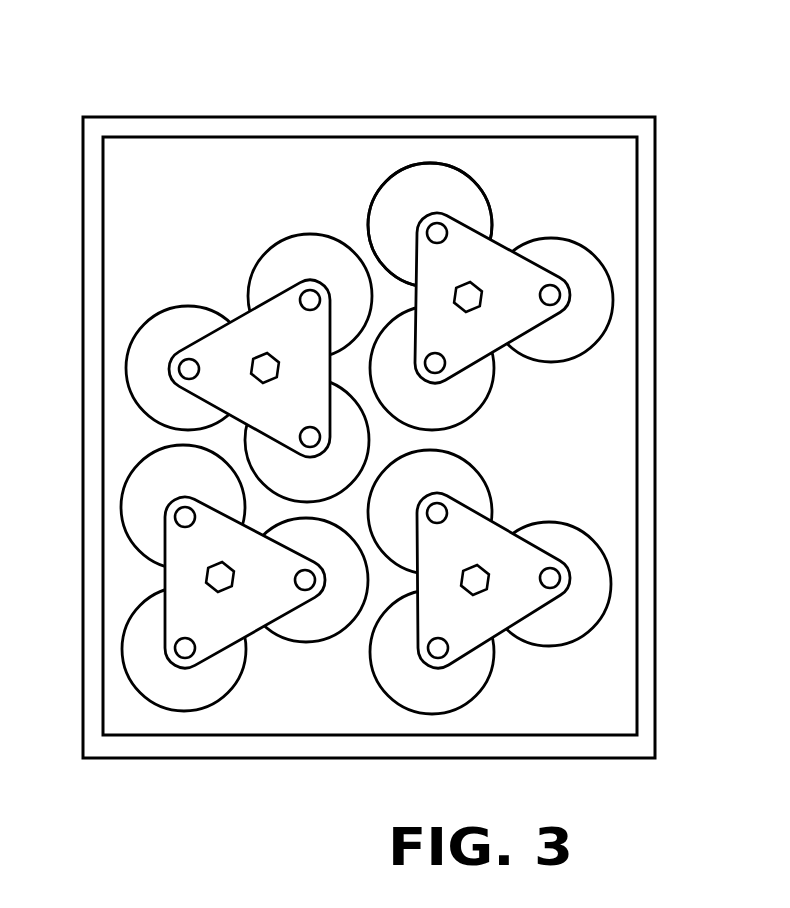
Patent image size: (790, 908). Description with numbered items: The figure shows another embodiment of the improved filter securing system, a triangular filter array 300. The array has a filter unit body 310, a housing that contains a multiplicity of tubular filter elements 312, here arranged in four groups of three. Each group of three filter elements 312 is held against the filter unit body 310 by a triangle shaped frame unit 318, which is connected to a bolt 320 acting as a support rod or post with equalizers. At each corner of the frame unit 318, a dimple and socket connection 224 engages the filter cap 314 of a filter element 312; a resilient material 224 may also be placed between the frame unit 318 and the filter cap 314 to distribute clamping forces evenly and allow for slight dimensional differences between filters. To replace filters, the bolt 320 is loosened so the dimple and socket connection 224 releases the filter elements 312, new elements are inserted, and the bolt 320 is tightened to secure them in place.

The triangular filter array 300 is at (503, 53).
The filter unit body 310 is at (244, 117).
The tubular filter elements 312 is at (273, 247).
The filter cap 314 is at (371, 207).
The triangle shaped frame unit 318 is at (305, 347).
The dimple and socket connection 224 is at (553, 284).
The bolt 320 is at (482, 304).